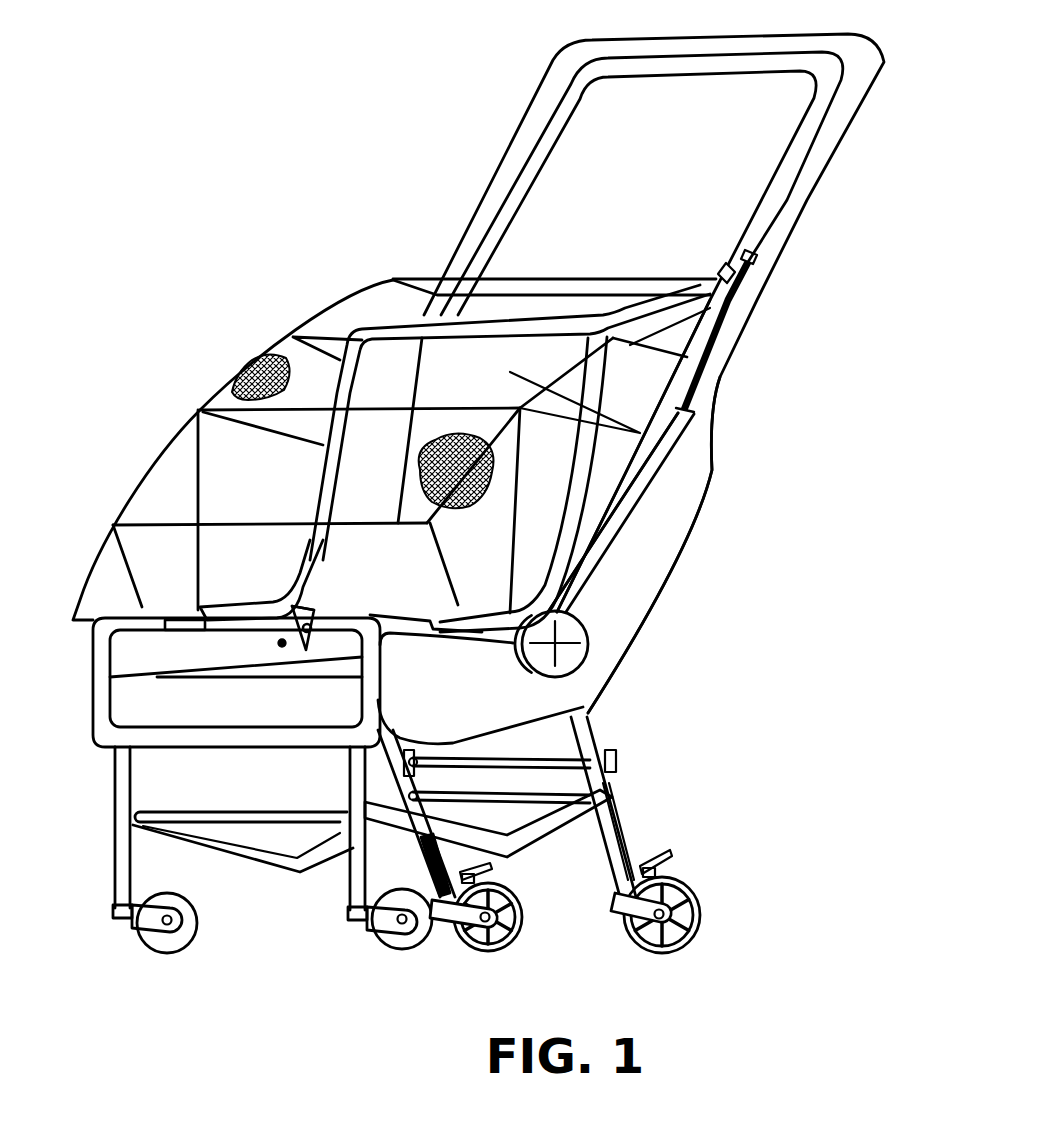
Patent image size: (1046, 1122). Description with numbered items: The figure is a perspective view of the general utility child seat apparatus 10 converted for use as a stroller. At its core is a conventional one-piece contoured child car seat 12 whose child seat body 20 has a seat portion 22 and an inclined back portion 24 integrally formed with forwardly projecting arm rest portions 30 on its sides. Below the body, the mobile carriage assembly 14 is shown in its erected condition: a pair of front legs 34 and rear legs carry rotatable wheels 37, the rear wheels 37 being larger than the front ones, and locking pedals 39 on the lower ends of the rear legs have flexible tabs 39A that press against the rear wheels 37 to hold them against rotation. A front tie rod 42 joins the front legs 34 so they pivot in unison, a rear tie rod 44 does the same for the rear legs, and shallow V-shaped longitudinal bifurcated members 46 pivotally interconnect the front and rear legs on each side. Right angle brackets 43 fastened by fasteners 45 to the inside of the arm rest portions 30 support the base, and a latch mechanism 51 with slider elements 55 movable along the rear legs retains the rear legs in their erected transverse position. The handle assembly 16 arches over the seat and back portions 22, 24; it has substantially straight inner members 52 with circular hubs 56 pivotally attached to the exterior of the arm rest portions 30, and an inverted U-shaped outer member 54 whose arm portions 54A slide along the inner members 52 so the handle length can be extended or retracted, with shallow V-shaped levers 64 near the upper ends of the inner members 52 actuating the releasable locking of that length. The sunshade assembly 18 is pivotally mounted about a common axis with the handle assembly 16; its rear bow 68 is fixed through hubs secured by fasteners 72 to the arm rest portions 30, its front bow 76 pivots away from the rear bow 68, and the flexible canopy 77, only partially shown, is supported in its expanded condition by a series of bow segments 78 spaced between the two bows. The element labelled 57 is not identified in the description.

The general utility child seat apparatus 10 is at (340, 118).
The child car seat 12 is at (686, 506).
The mobile carriage assembly 14 is at (677, 790).
The handle assembly 16 is at (507, 160).
The sunshade assembly 18 is at (394, 419).
The child seat body 20 is at (657, 612).
The seat portion 22 is at (250, 713).
The back portion 24 is at (552, 300).
The arm rest portions 30 is at (253, 605).
The front legs 34 is at (115, 837).
The wheels 37 is at (180, 940).
The locking pedals 39 is at (490, 865).
The flexible tabs 39A is at (527, 890).
The front tie rod 42 is at (242, 810).
The right angle brackets 43 is at (306, 603).
The rear tie rod 44 is at (507, 790).
The fasteners 45 is at (313, 617).
The longitudinal bifurcated members 46 is at (240, 857).
The latch mechanism 51 is at (612, 740).
The inner members 52 is at (603, 553).
The outer member 54 is at (730, 73).
The arm portions 54A is at (513, 222).
The slider elements 55 is at (410, 760).
The circular hubs 56 is at (577, 662).
The footrest lower bar 57 is at (452, 757).
The levers 64 is at (732, 262).
The rear bow 68 is at (657, 279).
The fasteners 72 is at (282, 647).
The front bow 76 is at (250, 620).
The canopy 77 is at (257, 357).
The bow segments 78 is at (148, 525).